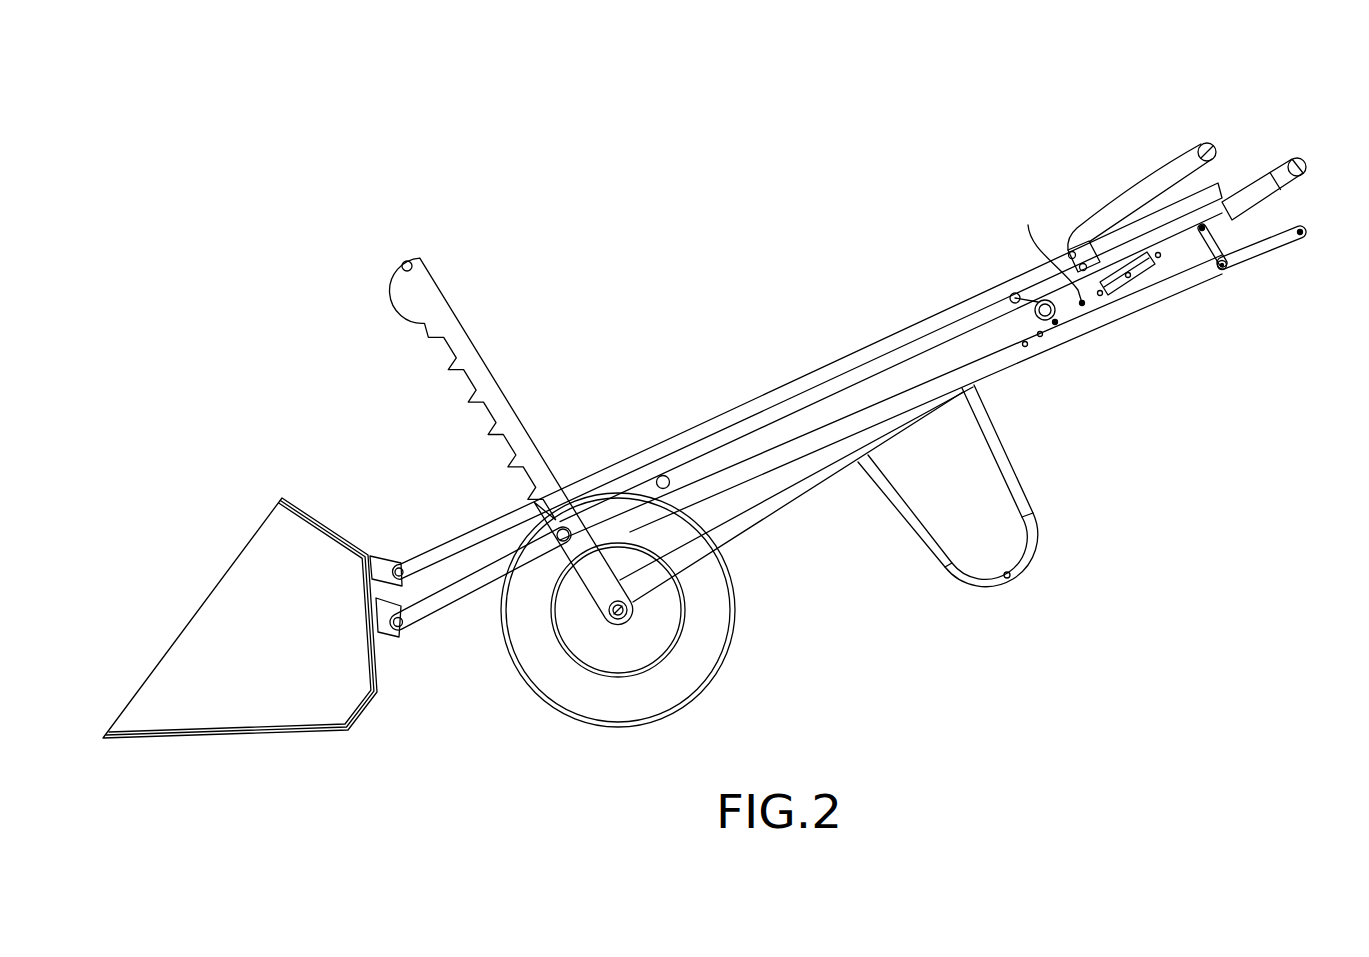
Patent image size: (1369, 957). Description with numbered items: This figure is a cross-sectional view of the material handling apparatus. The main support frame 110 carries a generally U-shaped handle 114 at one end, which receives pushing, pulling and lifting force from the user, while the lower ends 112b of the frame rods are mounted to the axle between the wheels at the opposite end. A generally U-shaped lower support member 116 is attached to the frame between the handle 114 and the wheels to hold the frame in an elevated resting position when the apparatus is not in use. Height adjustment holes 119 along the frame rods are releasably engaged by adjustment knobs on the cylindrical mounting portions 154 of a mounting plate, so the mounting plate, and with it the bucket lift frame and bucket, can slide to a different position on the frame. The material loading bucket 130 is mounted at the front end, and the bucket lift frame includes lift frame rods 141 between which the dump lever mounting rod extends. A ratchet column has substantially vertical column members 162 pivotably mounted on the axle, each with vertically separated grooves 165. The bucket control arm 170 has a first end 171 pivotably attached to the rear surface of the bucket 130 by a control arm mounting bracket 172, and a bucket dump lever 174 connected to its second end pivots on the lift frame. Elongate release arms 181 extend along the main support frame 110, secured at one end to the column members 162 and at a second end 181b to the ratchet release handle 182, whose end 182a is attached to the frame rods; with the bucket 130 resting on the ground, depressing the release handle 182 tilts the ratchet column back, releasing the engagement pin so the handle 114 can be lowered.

The main support frame 110 is at (792, 498).
The lower ends of frame rods 112b is at (640, 598).
The handle 114 is at (1275, 155).
The lower support member 116 is at (1024, 514).
The height adjustment holes 119 is at (1055, 322).
The material loading bucket 130 is at (250, 697).
The lift frame rods 141 is at (427, 605).
The cylindrical mounting portion 154 is at (1142, 268).
The column members 162 is at (483, 441).
The grooves 165 is at (440, 348).
The bucket control arm 170 is at (817, 376).
The first end of control arm 171 is at (405, 564).
The control arm mounting bracket 172 is at (383, 570).
The bucket dump lever 174 is at (1118, 205).
The release arms 181 is at (1041, 345).
The second end of release arms 181b is at (1217, 272).
The ratchet release handle 182 is at (1281, 255).
The end of ratchet release handle 182a is at (1228, 240).